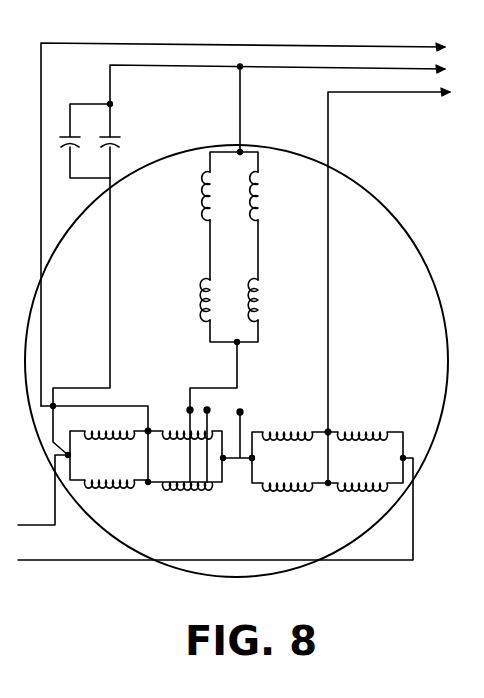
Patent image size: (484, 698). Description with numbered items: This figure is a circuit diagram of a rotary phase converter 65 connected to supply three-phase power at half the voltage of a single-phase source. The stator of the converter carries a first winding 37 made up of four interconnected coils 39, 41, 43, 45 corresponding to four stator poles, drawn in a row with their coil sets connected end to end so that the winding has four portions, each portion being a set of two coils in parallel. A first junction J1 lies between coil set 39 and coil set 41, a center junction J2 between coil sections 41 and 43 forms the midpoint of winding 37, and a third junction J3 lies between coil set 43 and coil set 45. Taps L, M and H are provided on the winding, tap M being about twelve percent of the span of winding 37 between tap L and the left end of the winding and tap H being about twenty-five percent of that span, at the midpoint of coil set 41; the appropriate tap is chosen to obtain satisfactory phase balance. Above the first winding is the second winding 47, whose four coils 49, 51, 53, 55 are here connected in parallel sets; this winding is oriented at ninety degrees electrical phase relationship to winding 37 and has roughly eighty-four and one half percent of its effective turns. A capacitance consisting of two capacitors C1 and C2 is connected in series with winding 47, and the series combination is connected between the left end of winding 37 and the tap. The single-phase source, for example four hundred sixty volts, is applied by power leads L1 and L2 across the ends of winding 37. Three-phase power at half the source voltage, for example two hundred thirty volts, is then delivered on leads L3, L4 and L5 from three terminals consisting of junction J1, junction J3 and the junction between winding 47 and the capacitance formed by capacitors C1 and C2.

The first winding 37 is at (256, 527).
The coil 39 is at (125, 478).
The coil 41 is at (180, 464).
The coil 43 is at (306, 454).
The coil 45 is at (342, 446).
The second winding 47 is at (250, 262).
The coil 49 is at (206, 185).
The coil 51 is at (264, 180).
The coil 53 is at (206, 285).
The coil 55 is at (262, 305).
The rotary converter 65 is at (360, 185).
The capacitor C1 is at (84, 140).
The capacitor C2 is at (124, 140).
The power lead L1 is at (55, 560).
The power lead L2 is at (44, 512).
The lead L3 is at (408, 92).
The lead L4 is at (374, 47).
The lead L5 is at (425, 69).
The first junction J1 is at (148, 430).
The center junction J2 is at (254, 436).
The third junction J3 is at (329, 432).
The tap H is at (188, 408).
The tap M is at (208, 410).
The tap L is at (241, 412).